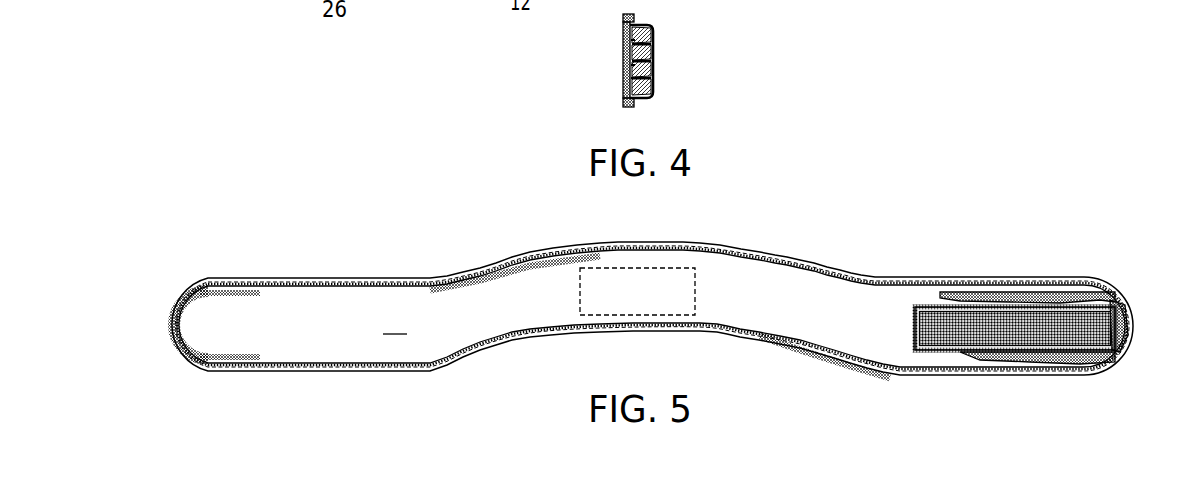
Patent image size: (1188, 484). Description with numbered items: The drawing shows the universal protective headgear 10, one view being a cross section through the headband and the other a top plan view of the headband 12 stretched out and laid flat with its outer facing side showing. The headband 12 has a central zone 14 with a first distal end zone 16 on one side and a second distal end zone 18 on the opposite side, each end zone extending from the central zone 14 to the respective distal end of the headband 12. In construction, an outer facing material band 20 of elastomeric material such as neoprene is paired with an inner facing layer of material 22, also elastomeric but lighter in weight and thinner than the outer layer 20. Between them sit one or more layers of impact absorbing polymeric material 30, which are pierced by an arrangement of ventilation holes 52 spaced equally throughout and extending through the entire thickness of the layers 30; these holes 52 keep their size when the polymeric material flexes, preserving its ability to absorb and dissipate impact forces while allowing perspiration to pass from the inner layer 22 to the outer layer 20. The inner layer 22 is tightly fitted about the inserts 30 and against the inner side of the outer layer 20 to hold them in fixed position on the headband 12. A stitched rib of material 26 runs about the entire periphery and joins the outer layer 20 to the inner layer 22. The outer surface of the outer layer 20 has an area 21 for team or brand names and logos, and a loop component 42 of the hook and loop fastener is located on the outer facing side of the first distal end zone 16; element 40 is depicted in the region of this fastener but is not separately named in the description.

In FIG. 5, the universal protective headgear 10 is at (652, 254).
In FIG. 5, the headband 12 is at (876, 276).
In FIG. 5, the central zone 14 is at (740, 290).
In FIG. 5, the first distal end zone 16 is at (1010, 296).
In FIG. 5, the second distal end zone 18 is at (290, 325).
In FIG. 4, the outer facing material band 20 is at (632, 52).
In FIG. 5, the outer facing material band 20 is at (395, 323).
In FIG. 5, the area for placement of team or brand names and/or logos 21 is at (645, 283).
In FIG. 4, the inner facing layer of material 22 is at (653, 74).
In FIG. 4, the stitched rib of material 26 is at (634, 15).
In FIG. 5, the stitched rib of material 26 is at (485, 262).
In FIG. 4, the layers of impact absorbing polymeric material 30 is at (653, 50).
In FIG. 5, the battery 40 is at (1025, 267).
In FIG. 5, the loop component 42 is at (1078, 325).
In FIG. 4, the ventilation holes 52 is at (632, 40).